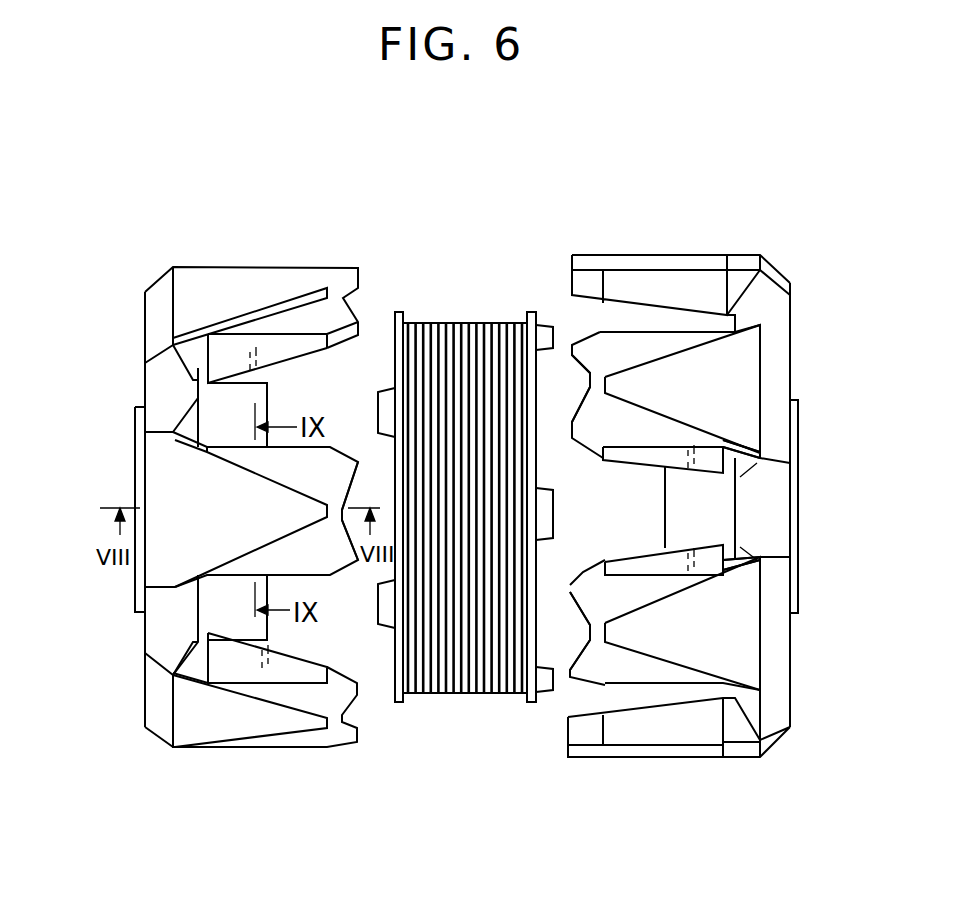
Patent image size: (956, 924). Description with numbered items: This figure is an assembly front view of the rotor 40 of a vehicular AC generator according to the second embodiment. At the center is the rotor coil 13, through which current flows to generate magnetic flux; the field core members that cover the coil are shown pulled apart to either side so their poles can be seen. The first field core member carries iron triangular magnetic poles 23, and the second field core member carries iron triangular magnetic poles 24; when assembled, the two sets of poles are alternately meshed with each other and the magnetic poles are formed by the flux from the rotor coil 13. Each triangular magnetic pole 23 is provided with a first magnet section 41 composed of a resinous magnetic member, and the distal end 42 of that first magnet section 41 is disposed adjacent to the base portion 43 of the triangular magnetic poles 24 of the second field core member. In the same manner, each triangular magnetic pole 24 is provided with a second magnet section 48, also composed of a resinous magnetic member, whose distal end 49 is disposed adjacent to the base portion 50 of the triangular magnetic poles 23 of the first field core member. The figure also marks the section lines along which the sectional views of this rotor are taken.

The rotor coil 13 is at (455, 700).
The triangular magnetic poles 23 is at (740, 383).
The triangular magnetic poles 24 is at (206, 293).
The rotor 40 is at (505, 290).
The first magnet section 41 is at (683, 470).
The distal end 42 is at (573, 446).
The base portion 43 is at (176, 444).
The second magnet section 48 is at (338, 570).
The distal end 49 is at (345, 450).
The base portion 50 is at (743, 438).